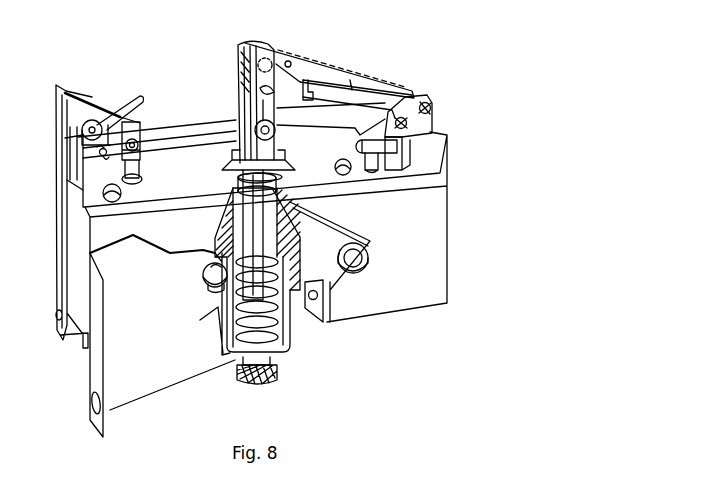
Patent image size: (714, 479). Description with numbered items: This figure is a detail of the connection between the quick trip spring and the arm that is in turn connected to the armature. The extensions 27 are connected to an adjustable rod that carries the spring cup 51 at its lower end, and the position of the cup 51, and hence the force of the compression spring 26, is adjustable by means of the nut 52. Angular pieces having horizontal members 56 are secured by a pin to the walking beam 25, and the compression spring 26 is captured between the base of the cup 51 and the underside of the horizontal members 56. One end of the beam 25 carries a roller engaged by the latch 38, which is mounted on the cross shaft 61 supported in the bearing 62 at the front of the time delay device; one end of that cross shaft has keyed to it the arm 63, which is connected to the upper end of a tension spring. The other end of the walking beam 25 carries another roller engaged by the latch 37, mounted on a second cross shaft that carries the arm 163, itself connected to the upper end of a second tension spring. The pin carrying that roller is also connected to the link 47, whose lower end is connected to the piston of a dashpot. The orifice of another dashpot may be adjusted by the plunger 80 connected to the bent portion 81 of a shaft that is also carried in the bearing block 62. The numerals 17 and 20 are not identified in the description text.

The arm 163 is at (94, 120).
The latch 37 is at (141, 95).
The walking beam 25 is at (170, 133).
The horizontal members 56 is at (232, 152).
The arm 17 is at (290, 58).
The arm 63 is at (320, 92).
The latch 38 is at (352, 80).
The bracket 20 is at (431, 110).
The bearing 62 is at (407, 122).
The cross shaft 61 is at (404, 144).
The bent portion 81 is at (398, 146).
The plunger 80 is at (390, 177).
The link 47 is at (141, 170).
The extensions 27 is at (227, 300).
The compression spring 26 is at (226, 355).
The spring cup 51 is at (292, 335).
The nut 52 is at (279, 372).